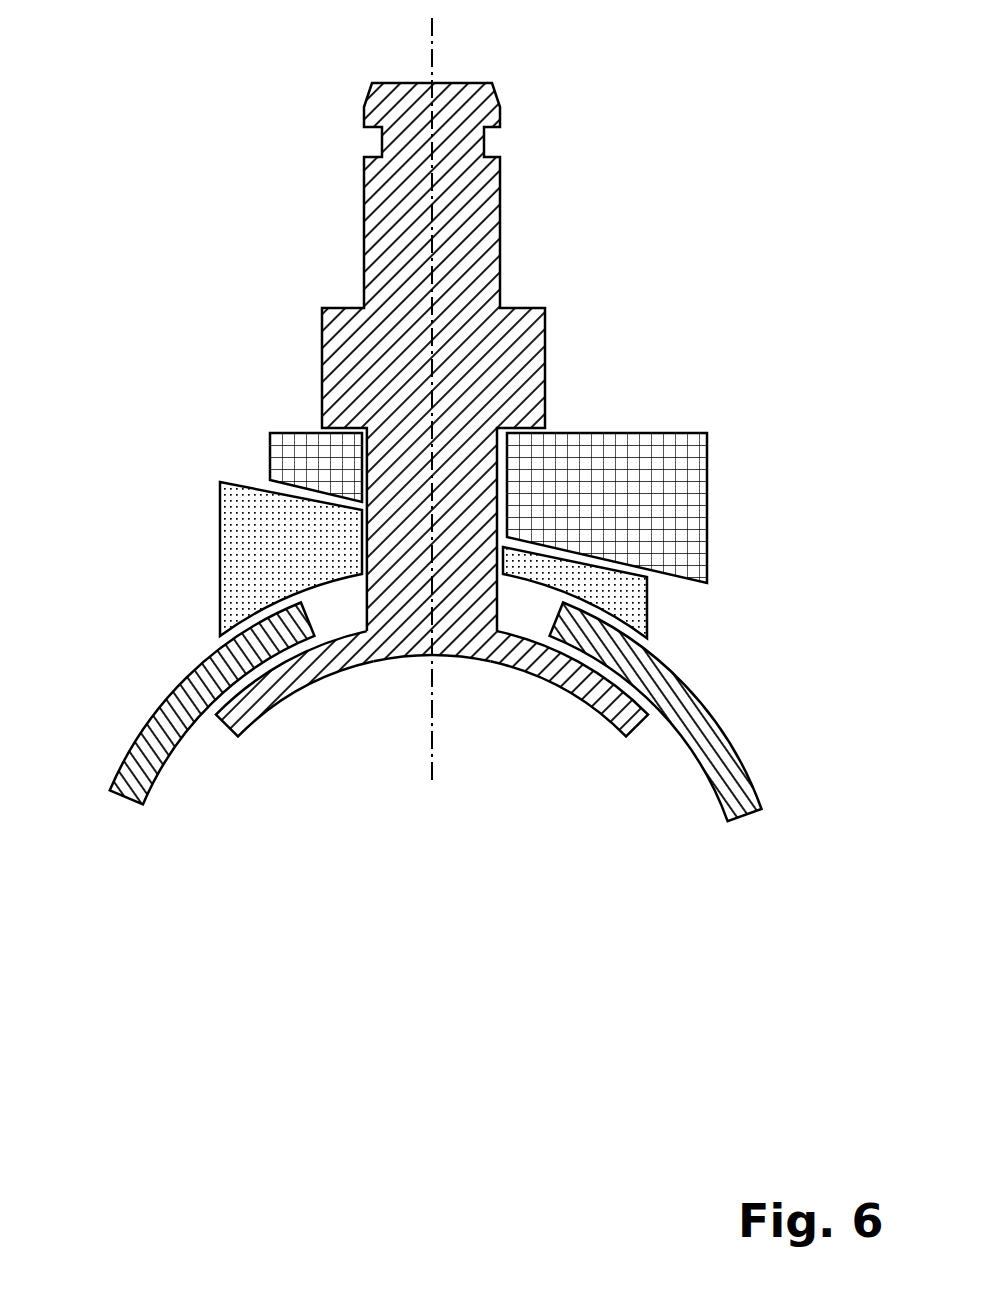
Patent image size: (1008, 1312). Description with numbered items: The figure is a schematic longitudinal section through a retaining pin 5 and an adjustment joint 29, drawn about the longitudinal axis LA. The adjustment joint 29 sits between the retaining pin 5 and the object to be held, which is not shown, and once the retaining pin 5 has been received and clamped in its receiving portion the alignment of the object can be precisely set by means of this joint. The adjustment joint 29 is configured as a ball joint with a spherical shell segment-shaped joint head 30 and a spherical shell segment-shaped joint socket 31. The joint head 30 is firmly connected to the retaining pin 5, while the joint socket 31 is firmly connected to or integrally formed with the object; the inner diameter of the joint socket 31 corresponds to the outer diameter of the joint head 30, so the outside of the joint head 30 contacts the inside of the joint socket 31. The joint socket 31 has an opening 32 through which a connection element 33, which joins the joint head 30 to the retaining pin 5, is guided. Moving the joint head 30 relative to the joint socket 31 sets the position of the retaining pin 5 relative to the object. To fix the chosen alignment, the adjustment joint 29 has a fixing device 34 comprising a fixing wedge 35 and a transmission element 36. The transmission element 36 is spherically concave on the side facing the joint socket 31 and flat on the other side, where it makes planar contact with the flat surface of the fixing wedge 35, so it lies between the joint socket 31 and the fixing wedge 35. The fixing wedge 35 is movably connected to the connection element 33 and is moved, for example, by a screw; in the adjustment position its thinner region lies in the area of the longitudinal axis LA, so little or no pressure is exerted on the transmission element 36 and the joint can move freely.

The longitudinal axis LA is at (432, 55).
The retaining pin 5 is at (463, 198).
The adjustment joint 29 is at (431, 448).
The joint head 30 is at (287, 680).
The joint socket 31 is at (185, 690).
The opening 32 is at (527, 610).
The connection element 33 is at (465, 512).
The fixing device 34 is at (262, 475).
The fixing wedge 35 is at (675, 478).
The transmission element 36 is at (255, 550).